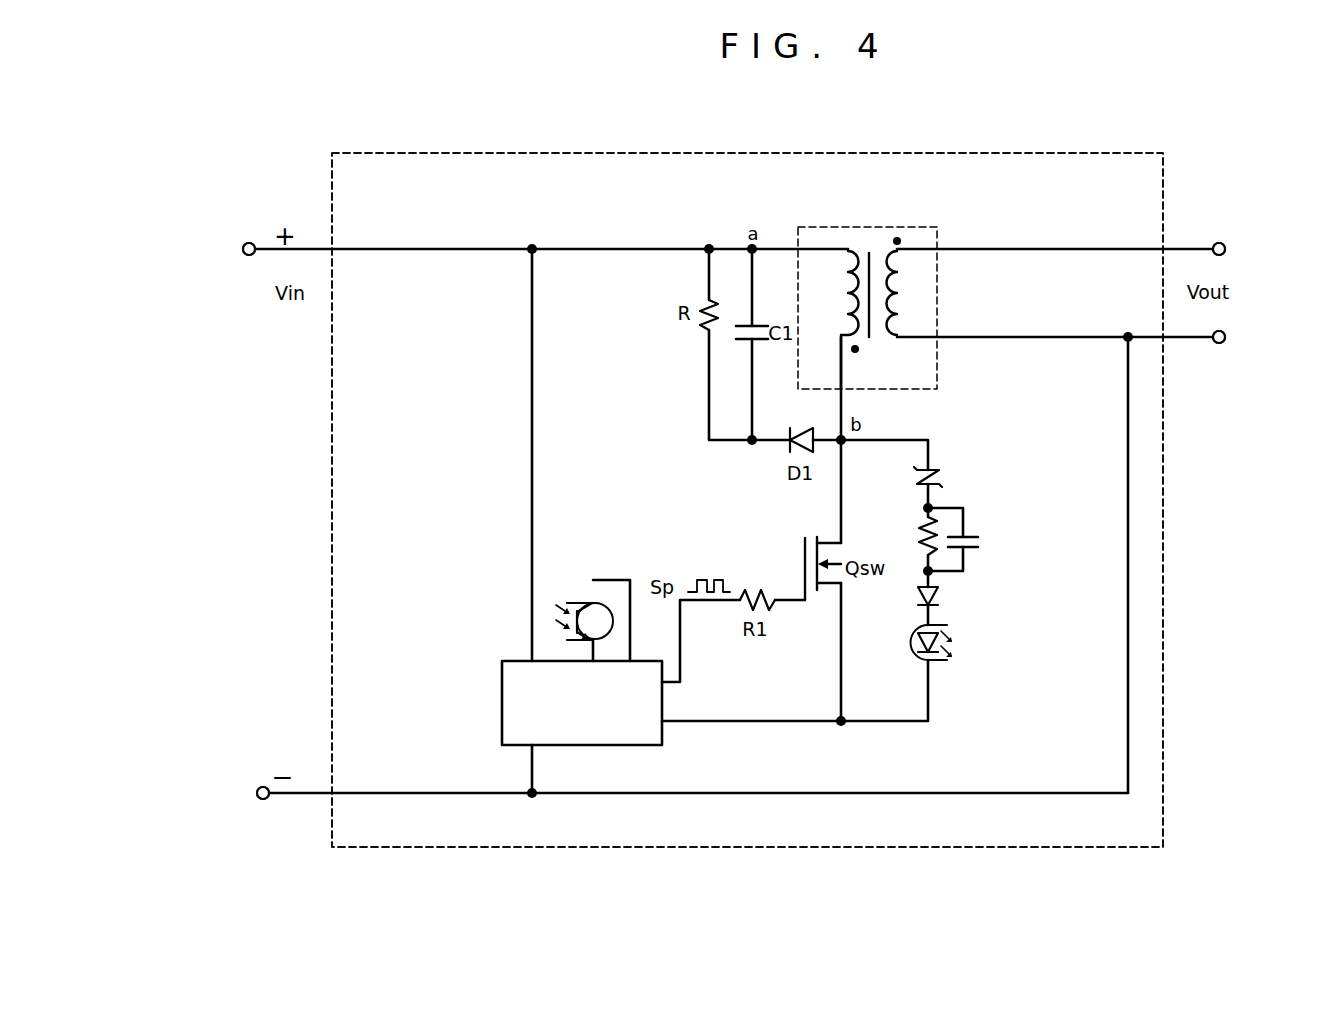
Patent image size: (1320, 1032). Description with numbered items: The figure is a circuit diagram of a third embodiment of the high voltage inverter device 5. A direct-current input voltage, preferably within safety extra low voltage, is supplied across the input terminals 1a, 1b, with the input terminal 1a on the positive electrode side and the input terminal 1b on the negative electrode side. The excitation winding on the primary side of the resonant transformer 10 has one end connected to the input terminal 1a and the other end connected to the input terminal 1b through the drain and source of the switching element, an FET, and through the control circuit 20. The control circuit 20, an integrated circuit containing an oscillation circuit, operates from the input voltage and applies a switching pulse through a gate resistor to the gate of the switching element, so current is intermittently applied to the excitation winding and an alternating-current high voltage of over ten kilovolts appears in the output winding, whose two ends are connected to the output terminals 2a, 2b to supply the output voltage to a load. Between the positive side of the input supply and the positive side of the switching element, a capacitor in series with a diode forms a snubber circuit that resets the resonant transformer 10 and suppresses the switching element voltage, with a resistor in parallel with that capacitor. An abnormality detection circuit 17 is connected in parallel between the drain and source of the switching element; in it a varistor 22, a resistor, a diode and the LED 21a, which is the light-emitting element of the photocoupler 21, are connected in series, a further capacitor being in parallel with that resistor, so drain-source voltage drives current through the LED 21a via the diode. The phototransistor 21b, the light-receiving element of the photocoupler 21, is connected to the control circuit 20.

The input terminal 1a is at (249, 243).
The input terminal 1b is at (263, 800).
The output terminal 2a is at (1219, 243).
The output terminal 2b is at (1219, 343).
The high voltage inverter device 5 is at (1163, 517).
The resonant transformer 10 is at (877, 227).
The abnormality detection circuit 17 is at (1003, 497).
The control circuit 20 is at (502, 702).
The photocoupler 21 is at (749, 614).
The LED 21a is at (912, 648).
The phototransistor 21b is at (583, 606).
The varistor 22 is at (945, 476).